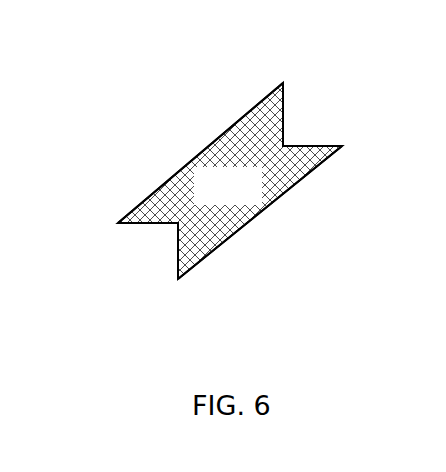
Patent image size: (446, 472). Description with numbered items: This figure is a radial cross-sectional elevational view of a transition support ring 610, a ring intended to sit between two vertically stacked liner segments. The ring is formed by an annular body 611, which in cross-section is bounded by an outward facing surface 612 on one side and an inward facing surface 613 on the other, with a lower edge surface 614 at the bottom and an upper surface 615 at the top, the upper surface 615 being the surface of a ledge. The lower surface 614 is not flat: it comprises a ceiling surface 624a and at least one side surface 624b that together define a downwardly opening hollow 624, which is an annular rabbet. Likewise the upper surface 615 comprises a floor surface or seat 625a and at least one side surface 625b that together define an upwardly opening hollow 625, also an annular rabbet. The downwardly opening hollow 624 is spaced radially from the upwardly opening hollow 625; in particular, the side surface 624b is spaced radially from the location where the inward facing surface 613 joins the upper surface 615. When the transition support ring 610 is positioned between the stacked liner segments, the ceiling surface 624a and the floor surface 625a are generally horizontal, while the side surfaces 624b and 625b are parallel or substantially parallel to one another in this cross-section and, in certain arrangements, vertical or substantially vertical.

The transition support ring 610 is at (189, 78).
The annular body 611 is at (228, 186).
The outward facing surface 612 is at (170, 183).
The inward facing surface 613 is at (267, 202).
The lower edge surface 614 is at (137, 226).
The upper surface 615 is at (320, 146).
The downwardly opening hollow 624 is at (142, 258).
The ceiling surface 624a is at (147, 226).
The side surface 624b is at (178, 264).
The upwardly opening hollow 625 is at (333, 103).
The floor surface or seat 625a is at (302, 146).
The side surface 625b is at (284, 111).